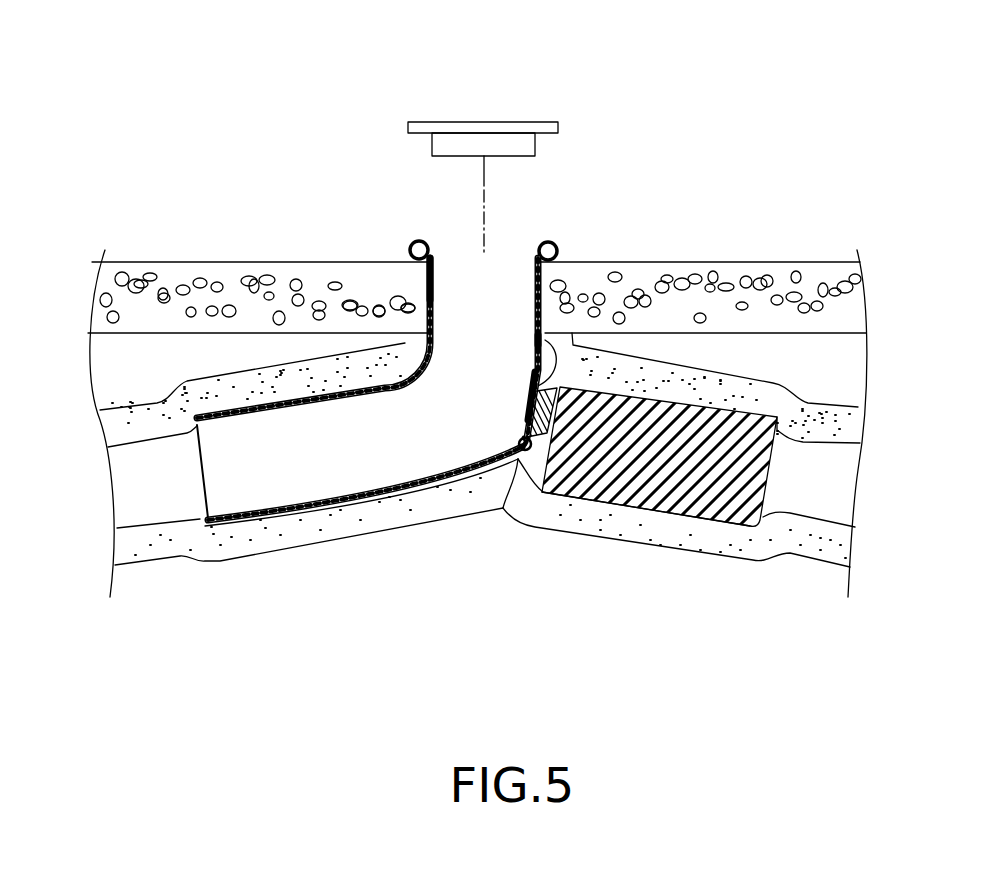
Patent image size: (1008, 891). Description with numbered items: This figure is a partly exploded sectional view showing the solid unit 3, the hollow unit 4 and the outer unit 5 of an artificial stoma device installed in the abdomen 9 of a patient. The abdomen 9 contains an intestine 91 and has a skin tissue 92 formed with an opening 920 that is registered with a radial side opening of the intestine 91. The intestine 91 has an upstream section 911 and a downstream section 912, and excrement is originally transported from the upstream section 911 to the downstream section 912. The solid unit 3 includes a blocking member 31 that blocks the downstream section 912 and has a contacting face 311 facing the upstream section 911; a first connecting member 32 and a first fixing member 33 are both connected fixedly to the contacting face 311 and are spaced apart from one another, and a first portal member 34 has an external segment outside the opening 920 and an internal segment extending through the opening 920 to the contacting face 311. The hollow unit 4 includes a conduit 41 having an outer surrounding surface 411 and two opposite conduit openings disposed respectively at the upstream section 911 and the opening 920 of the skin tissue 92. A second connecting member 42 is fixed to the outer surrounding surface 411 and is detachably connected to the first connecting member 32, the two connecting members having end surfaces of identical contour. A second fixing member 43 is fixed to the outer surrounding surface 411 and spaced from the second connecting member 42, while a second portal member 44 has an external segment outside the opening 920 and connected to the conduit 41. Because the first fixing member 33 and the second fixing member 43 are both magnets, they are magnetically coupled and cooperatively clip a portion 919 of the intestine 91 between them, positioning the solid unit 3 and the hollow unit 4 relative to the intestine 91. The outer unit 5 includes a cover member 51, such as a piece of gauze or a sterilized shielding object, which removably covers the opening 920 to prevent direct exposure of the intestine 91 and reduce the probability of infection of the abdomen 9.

The solid unit 3 is at (652, 533).
The blocking member 31 is at (693, 512).
The contacting face 311 is at (529, 455).
The first connecting member 32 is at (523, 423).
The first fixing member 33 is at (573, 495).
The first portal member 34 is at (552, 241).
The hollow unit 4 is at (405, 515).
The conduit 41 is at (320, 512).
The outer surrounding surface 411 is at (537, 340).
The second connecting member 42 is at (527, 413).
The second fixing member 43 is at (520, 460).
The second portal member 44 is at (410, 247).
The outer unit 5 is at (545, 108).
The cover member 51 is at (483, 128).
The abdomen 9 is at (745, 243).
The intestine 91 is at (125, 388).
The upstream section 911 is at (273, 547).
The downstream section 912 is at (717, 550).
The portion of the intestine 919 is at (522, 435).
The skin tissue 92 is at (825, 265).
The opening 920 is at (447, 262).